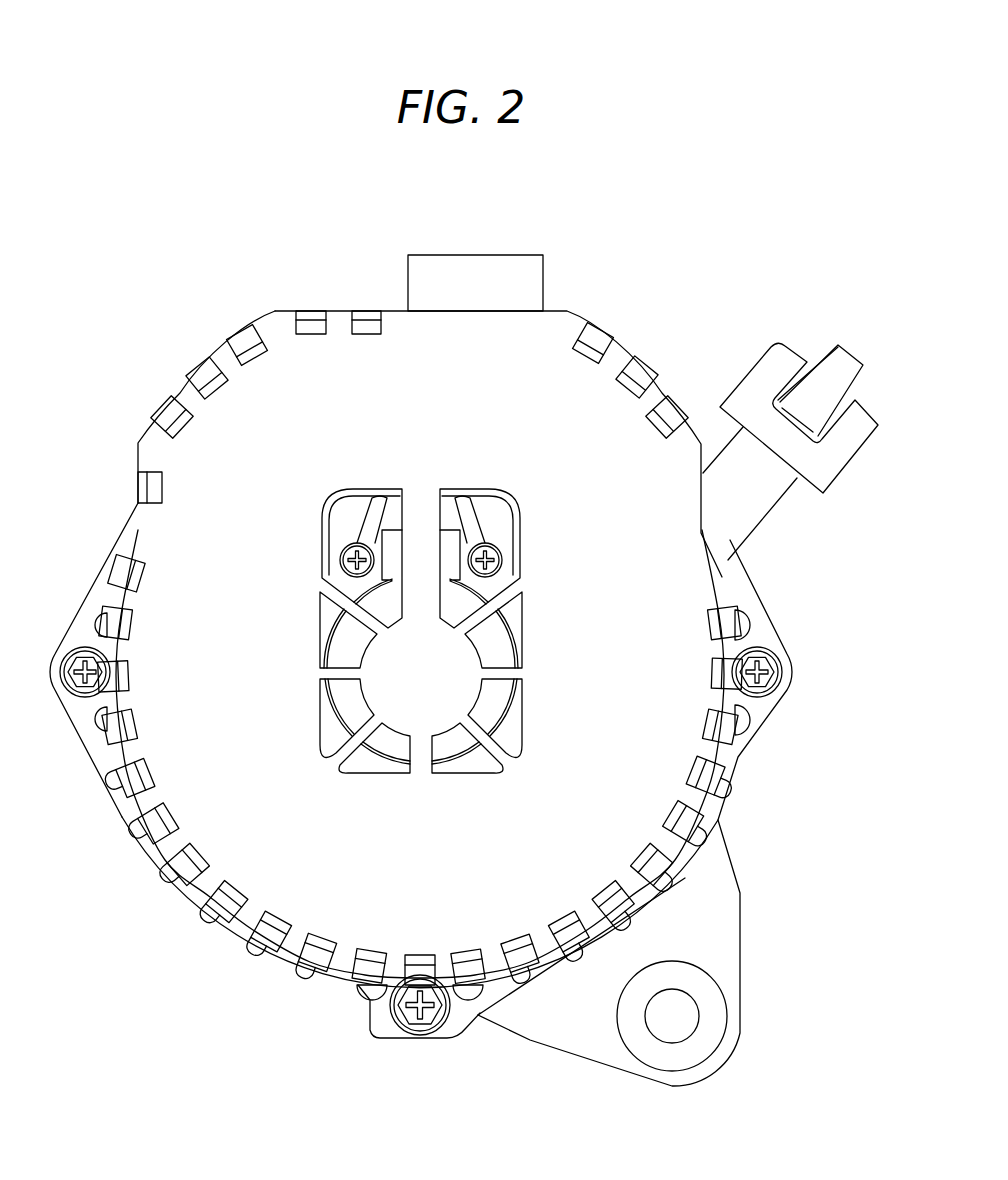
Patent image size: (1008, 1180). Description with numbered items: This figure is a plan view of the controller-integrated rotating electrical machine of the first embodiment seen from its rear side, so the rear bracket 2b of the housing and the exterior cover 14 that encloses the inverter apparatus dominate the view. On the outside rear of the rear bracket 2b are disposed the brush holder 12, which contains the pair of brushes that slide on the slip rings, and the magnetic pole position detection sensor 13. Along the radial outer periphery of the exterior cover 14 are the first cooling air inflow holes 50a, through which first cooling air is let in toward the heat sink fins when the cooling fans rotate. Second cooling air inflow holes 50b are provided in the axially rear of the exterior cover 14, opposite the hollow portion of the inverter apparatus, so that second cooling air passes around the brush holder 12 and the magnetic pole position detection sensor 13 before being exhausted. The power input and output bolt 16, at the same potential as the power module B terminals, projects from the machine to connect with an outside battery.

The rear bracket 2b is at (475, 698).
The brush holder 12 is at (447, 560).
The magnetic pole position detection sensor 13 is at (343, 692).
The exterior cover 14 is at (287, 367).
The power input and output bolt 16 is at (826, 365).
The first cooling air inflow holes 50a is at (192, 885).
The second cooling air inflow holes 50b is at (347, 532).